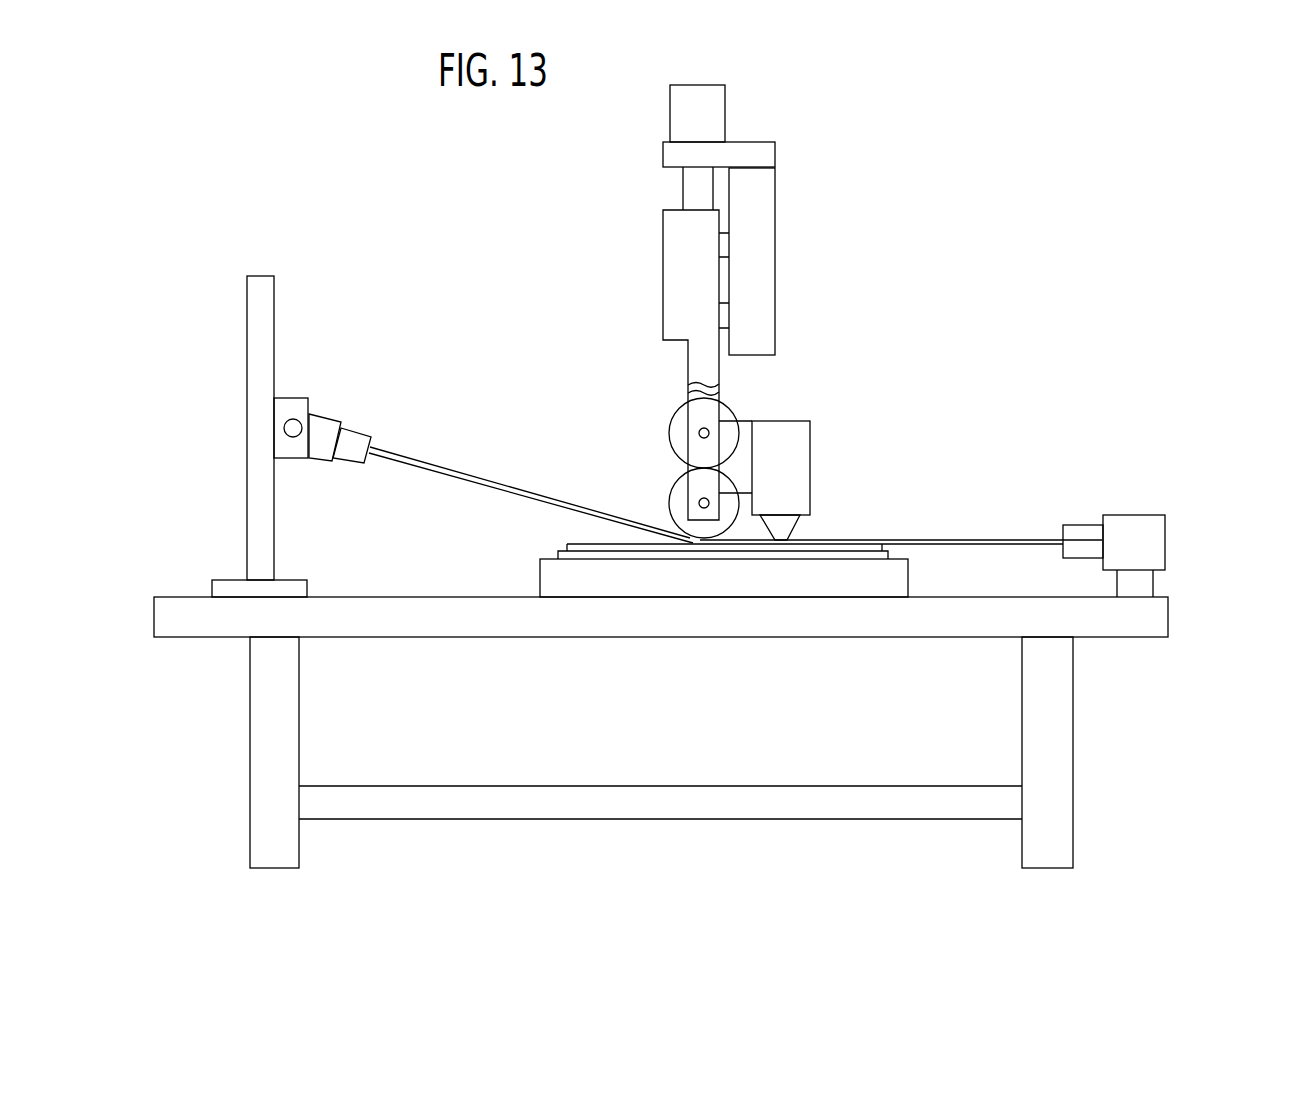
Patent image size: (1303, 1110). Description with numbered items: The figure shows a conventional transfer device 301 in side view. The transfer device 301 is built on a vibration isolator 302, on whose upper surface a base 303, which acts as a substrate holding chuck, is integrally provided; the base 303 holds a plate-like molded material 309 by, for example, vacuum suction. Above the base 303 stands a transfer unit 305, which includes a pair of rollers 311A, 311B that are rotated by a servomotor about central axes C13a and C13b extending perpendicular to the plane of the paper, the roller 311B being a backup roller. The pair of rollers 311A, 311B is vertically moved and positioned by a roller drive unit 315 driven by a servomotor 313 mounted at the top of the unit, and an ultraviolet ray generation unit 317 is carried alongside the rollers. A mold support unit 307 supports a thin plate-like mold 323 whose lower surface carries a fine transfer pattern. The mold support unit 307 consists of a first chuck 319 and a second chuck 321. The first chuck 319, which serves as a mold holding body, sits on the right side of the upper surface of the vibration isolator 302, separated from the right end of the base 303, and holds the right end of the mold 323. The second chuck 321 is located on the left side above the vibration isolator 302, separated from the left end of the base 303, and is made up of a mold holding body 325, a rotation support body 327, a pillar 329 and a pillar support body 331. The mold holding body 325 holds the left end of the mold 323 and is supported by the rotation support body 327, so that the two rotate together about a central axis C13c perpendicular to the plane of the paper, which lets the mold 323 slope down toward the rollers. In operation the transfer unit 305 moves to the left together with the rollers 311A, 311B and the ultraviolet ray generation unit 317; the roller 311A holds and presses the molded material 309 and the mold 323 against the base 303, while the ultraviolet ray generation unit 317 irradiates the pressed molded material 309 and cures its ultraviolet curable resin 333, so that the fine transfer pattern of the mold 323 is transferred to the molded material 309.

The transfer device 301 is at (978, 237).
The vibration isolator 302 is at (592, 625).
The base 303 is at (812, 583).
The transfer unit 305 is at (806, 295).
The mold support unit 307 is at (340, 300).
The molded material 309 is at (708, 553).
The roller 311A is at (676, 487).
The backup roller 311B is at (673, 413).
The servomotor 313 is at (725, 118).
The roller drive unit 315 is at (661, 292).
The ultraviolet ray generation unit 317 is at (810, 468).
The first chuck 319 is at (1166, 540).
The second chuck 321 is at (330, 420).
The mold 323 is at (450, 477).
The mold holding body 325 is at (317, 462).
The rotation support body 327 is at (302, 398).
The pillar 329 is at (263, 275).
The pillar support body 331 is at (232, 580).
The ultraviolet curable resin 333 is at (578, 543).
The central axis C13a is at (699, 503).
The central axis C13b is at (699, 433).
The central axis C13c is at (285, 432).